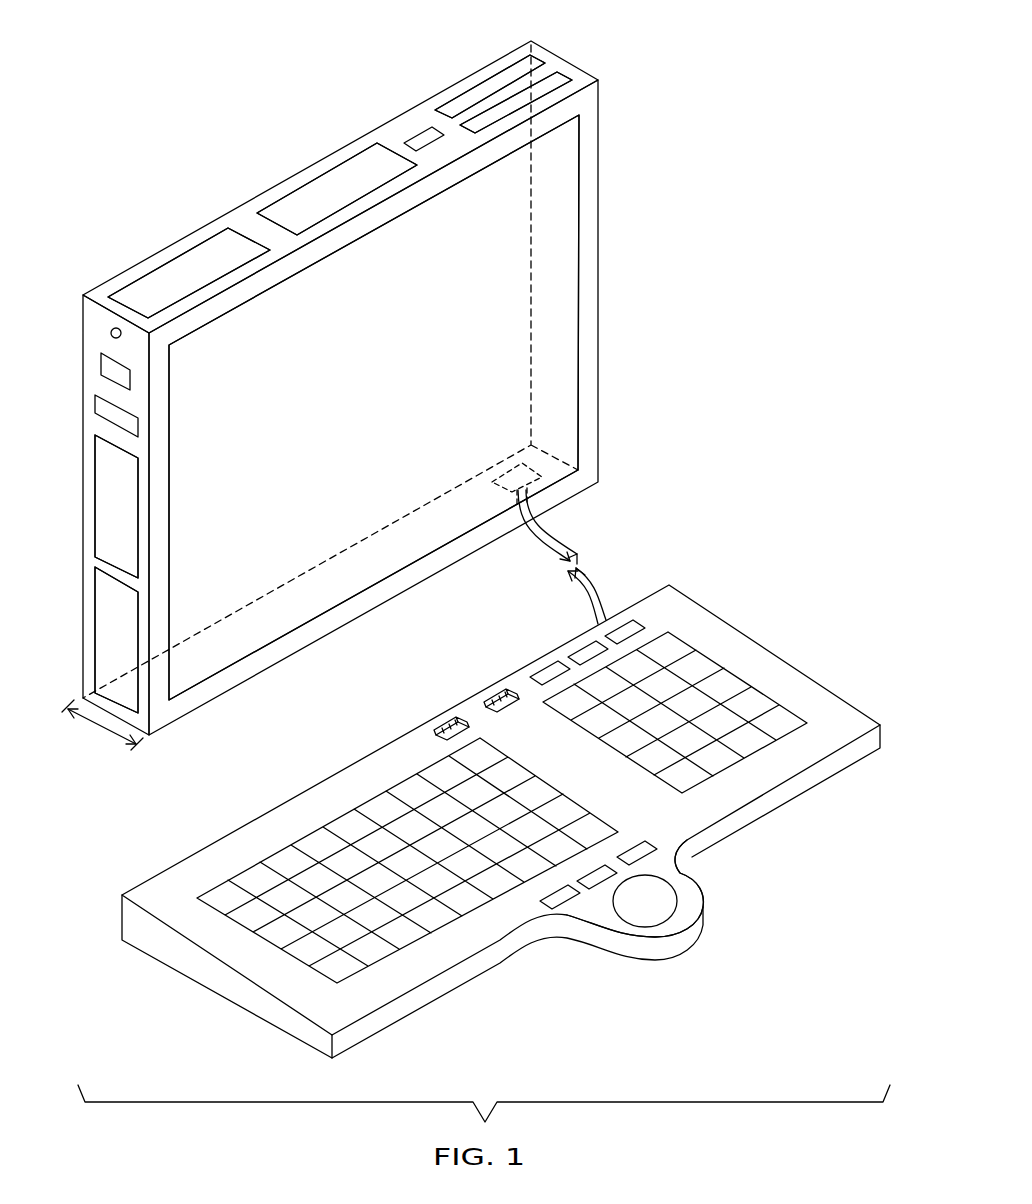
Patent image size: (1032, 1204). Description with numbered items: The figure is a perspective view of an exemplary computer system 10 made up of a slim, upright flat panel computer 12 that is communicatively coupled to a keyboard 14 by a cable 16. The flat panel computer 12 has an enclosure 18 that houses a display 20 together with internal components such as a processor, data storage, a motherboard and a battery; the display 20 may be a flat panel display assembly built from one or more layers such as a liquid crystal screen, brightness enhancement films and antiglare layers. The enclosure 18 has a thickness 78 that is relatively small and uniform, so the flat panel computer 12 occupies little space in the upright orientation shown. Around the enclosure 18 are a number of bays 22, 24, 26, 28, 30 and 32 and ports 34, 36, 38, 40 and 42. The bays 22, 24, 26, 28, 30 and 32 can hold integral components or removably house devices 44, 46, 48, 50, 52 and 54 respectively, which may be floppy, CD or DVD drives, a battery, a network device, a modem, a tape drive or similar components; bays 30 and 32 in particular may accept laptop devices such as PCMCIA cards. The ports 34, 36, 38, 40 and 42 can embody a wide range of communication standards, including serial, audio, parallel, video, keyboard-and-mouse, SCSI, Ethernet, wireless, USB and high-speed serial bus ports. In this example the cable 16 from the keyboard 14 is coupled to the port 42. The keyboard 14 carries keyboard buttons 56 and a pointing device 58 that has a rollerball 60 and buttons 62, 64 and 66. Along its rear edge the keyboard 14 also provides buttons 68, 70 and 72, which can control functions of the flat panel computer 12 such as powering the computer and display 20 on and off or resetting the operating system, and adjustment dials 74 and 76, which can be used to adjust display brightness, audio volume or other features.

The computer system 10 is at (727, 446).
The flat panel computer 12 is at (636, 200).
The keyboard 14 is at (212, 978).
The cable 16 is at (548, 547).
The enclosure 18 is at (598, 327).
The display 20 is at (562, 380).
The bay 22 is at (105, 600).
The bay 24 is at (103, 470).
The bay 26 is at (212, 250).
The bay 28 is at (352, 170).
The bay 30 is at (483, 88).
The bay 32 is at (555, 78).
The port 34 is at (97, 405).
The port 36 is at (102, 358).
The port 38 is at (108, 325).
The port 40 is at (420, 130).
The port 42 is at (550, 490).
The device 44 is at (105, 650).
The device 46 is at (108, 525).
The device 48 is at (163, 277).
The device 50 is at (292, 205).
The device 52 is at (522, 70).
The device 54 is at (543, 90).
The keyboard buttons 56 is at (760, 700).
The pointing device 58 is at (682, 887).
The rollerball 60 is at (670, 902).
The button 62 is at (565, 897).
The button 64 is at (597, 880).
The button 66 is at (647, 853).
The button 68 is at (623, 625).
The button 70 is at (583, 652).
The button 72 is at (547, 673).
The adjustment dial 74 is at (498, 692).
The adjustment dial 76 is at (447, 720).
The thickness 78 is at (102, 727).